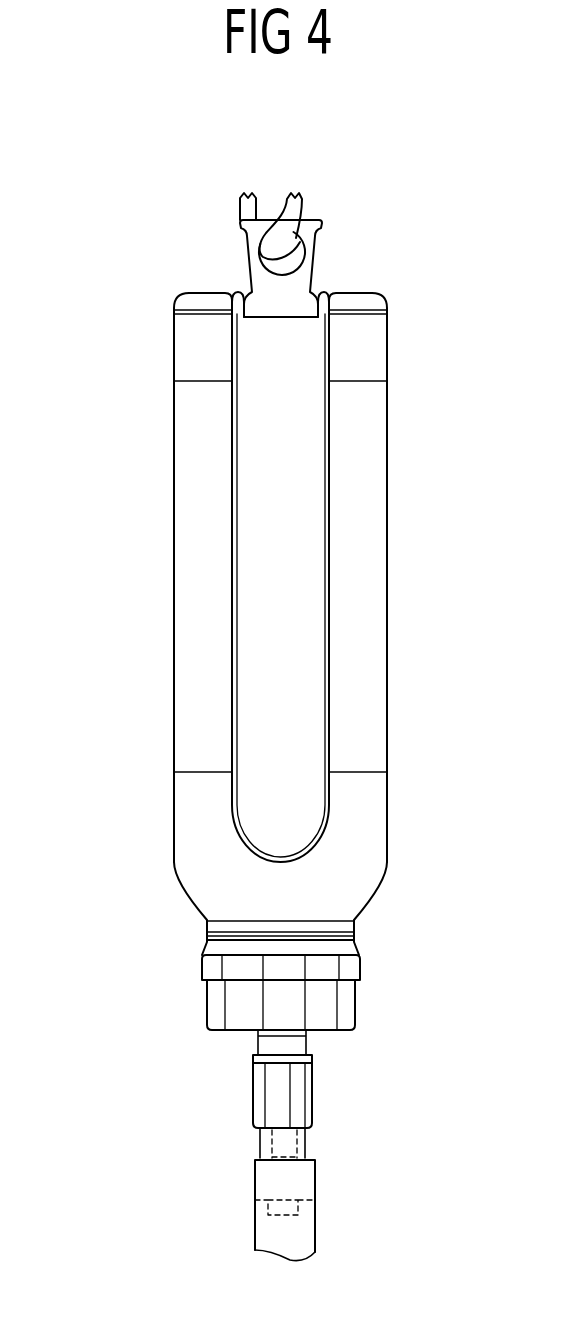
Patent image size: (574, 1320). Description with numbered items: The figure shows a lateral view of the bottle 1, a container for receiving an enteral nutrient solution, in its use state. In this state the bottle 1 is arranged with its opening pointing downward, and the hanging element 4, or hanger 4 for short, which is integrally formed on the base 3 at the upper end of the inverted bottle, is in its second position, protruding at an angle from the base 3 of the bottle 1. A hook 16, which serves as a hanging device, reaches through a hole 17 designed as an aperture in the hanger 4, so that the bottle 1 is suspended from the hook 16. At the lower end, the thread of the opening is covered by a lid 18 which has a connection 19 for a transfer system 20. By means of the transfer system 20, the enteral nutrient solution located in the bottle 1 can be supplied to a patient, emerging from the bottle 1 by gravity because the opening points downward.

The bottle 1 is at (160, 593).
The base 3 is at (198, 302).
The hanging element 4 is at (295, 287).
The hook 16 is at (292, 207).
The hole 17 is at (290, 257).
The lid 18 is at (327, 1007).
The connection 19 is at (282, 1098).
The transfer system 20 is at (297, 1180).